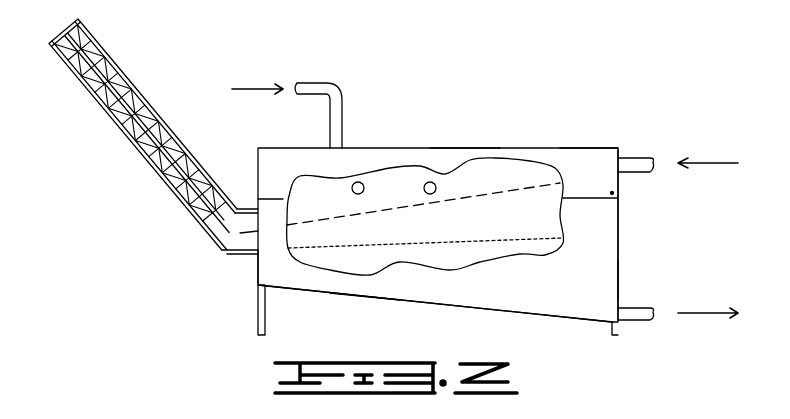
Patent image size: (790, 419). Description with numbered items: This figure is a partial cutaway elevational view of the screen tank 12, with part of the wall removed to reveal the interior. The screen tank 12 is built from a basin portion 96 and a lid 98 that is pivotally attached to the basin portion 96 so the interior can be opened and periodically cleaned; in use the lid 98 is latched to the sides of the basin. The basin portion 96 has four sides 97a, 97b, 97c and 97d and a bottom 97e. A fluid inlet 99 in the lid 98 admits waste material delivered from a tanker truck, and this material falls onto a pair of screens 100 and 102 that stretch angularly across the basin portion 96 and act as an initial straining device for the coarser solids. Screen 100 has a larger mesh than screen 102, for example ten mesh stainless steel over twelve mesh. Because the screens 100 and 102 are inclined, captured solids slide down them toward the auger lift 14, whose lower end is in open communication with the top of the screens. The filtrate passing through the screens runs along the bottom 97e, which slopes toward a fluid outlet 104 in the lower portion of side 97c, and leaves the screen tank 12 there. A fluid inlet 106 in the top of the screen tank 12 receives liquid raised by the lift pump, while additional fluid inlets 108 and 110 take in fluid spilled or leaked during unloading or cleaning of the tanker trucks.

The screen tank 12 is at (560, 145).
The auger lift 14 is at (142, 155).
The basin portion 96 is at (618, 222).
The side 97a is at (290, 283).
The side 97b is at (258, 267).
The side 97c is at (618, 280).
The side 97d is at (463, 183).
The bottom 97e is at (367, 298).
The lid 98 is at (600, 148).
The fluid inlet 99 is at (643, 155).
The screen 100 is at (508, 188).
The screen 102 is at (435, 245).
The fluid outlet 104 is at (632, 322).
The fluid inlet 106 is at (343, 107).
The fluid inlet 108 is at (352, 185).
The fluid inlet 110 is at (428, 182).